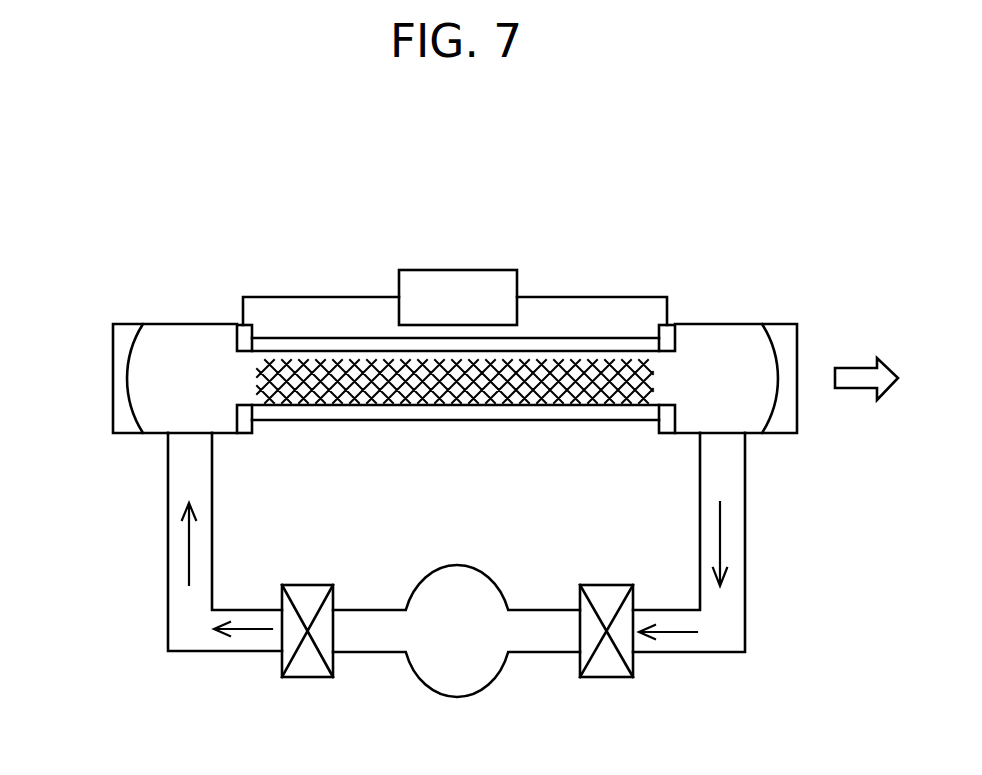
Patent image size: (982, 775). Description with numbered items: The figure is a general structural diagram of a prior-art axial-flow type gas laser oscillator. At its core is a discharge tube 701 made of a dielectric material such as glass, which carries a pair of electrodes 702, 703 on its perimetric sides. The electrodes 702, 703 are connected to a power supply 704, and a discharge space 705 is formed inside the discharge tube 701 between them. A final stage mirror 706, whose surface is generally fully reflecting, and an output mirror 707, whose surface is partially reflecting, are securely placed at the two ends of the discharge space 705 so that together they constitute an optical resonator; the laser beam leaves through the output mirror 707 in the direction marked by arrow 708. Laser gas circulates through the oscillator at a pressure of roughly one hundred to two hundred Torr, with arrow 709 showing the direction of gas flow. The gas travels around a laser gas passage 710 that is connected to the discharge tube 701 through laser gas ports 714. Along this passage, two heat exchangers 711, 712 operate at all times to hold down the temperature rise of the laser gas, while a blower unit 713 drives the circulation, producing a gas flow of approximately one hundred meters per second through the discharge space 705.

The discharge tube 701 is at (497, 420).
The electrode 702 is at (247, 333).
The electrode 703 is at (670, 330).
The power supply 704 is at (482, 270).
The discharge space 705 is at (367, 377).
The final stage mirror 706 is at (120, 433).
The output mirror 707 is at (790, 322).
The gas outlet flow 708 is at (850, 365).
The arrow 709 is at (725, 542).
The laser gas passage 710 is at (180, 653).
The heat exchanger 711 is at (307, 678).
The heat exchanger 712 is at (618, 680).
The blower unit 713 is at (477, 695).
The laser gas port 714 is at (783, 467).